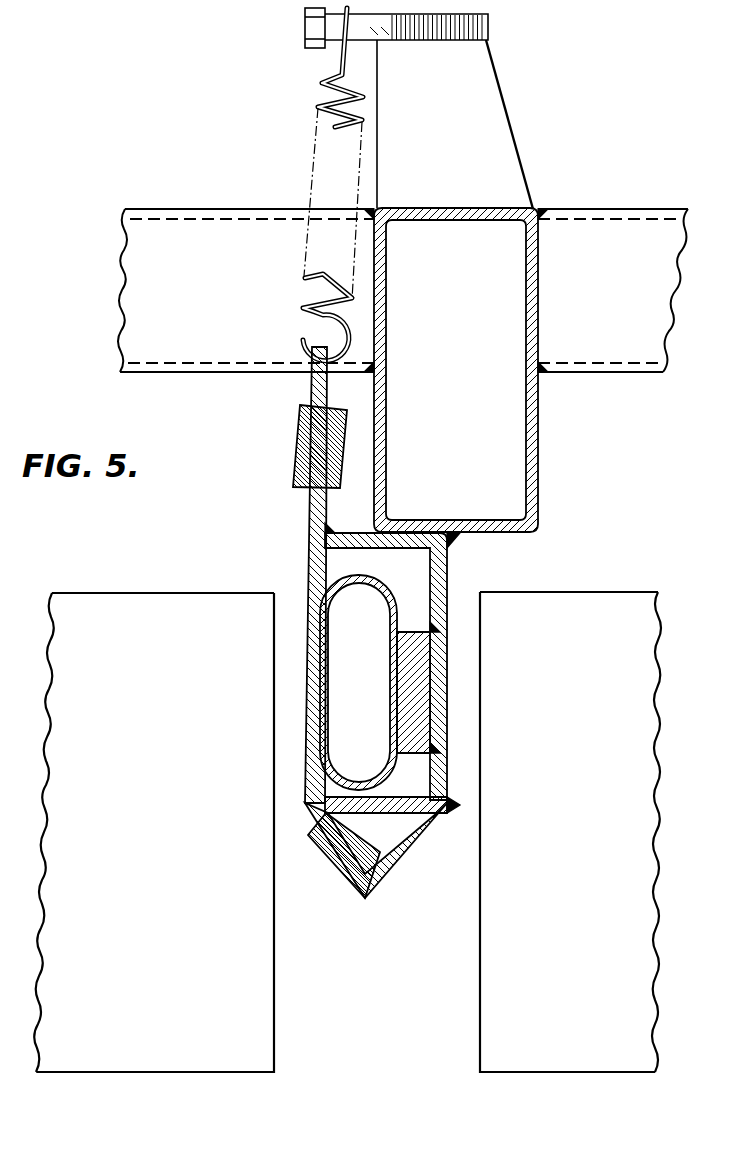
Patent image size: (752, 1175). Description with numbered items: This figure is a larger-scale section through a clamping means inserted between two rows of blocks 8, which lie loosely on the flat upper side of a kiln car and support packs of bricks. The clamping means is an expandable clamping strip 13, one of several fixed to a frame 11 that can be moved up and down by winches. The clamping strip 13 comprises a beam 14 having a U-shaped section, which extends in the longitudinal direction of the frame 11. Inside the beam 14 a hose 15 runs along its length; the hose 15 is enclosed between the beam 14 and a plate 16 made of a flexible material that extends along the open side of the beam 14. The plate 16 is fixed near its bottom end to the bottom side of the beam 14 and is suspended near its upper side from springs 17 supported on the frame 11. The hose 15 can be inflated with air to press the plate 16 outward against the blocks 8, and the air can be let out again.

The rows of blocks 8 is at (118, 612).
The frame 11 is at (580, 209).
The expandable clamping strip 13 is at (358, 902).
The beam 14 is at (445, 790).
The hose 15 is at (392, 600).
The plate 16 is at (308, 530).
The springs 17 is at (322, 82).